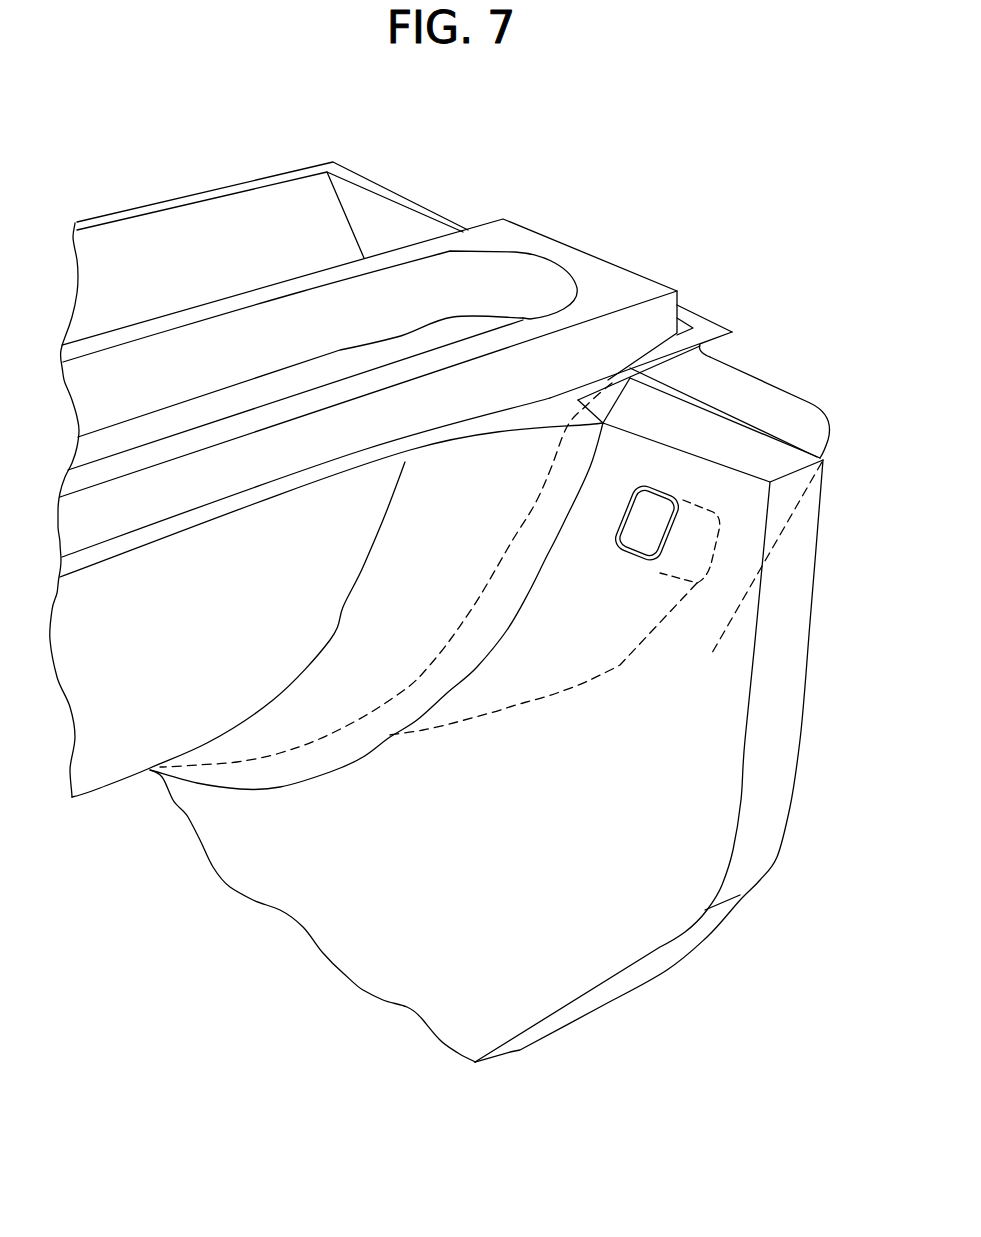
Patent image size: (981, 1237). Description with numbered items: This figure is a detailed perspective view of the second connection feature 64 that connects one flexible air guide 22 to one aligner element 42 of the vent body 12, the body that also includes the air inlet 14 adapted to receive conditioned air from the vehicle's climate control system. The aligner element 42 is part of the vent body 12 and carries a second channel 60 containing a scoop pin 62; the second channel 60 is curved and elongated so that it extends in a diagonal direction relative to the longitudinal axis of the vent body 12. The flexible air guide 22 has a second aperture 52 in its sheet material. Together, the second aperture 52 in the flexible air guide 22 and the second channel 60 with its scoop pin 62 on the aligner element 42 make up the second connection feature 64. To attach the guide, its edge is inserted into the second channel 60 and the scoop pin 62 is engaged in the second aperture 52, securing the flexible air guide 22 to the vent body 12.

The air inlet 14 is at (557, 262).
The vent body 12 is at (633, 273).
The second channel 60 is at (607, 381).
The second connection feature 64 is at (770, 417).
The scoop pin 62 is at (650, 533).
The second aperture 52 is at (667, 558).
The aligner element 42 is at (333, 700).
The flexible air guide 22 is at (623, 922).